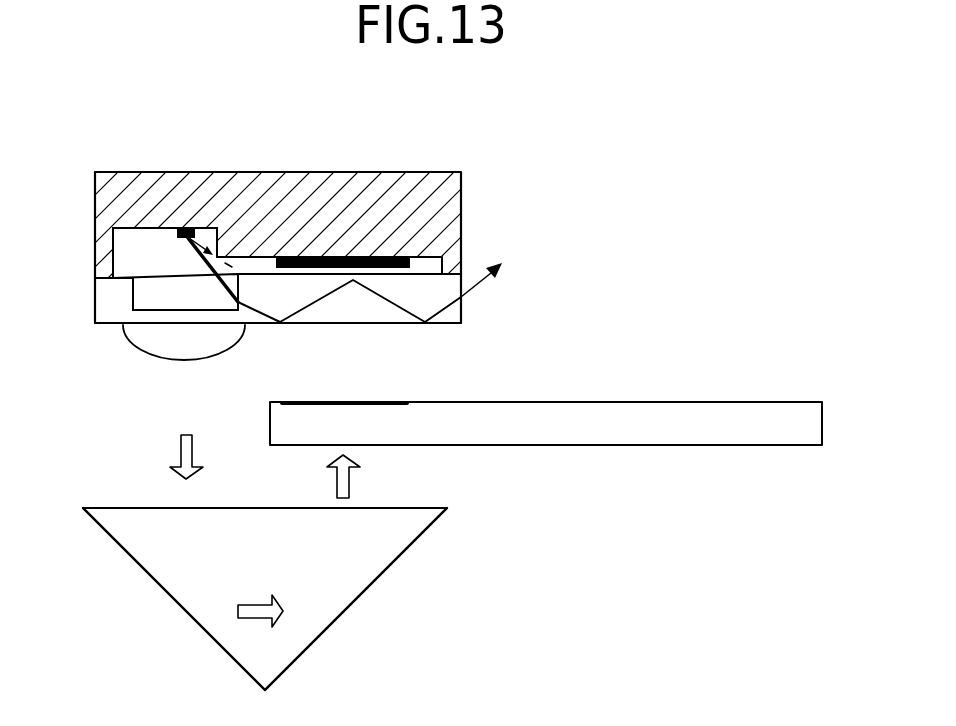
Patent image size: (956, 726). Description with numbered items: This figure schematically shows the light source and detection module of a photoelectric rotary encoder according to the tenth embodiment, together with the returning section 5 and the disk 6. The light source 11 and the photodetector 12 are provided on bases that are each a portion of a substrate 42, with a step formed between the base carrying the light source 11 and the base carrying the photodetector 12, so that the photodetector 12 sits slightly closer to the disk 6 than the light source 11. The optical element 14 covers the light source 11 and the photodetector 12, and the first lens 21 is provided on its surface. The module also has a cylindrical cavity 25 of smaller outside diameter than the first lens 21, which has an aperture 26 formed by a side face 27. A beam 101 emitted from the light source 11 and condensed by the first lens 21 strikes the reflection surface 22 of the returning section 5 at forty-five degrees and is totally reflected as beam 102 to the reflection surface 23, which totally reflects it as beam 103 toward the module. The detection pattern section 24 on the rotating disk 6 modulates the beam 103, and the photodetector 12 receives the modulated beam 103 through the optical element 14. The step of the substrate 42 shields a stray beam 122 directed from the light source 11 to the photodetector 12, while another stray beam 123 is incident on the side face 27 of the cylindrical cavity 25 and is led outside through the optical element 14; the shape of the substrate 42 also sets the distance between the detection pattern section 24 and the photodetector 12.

The returning section 5 is at (152, 568).
The disk 6 is at (537, 407).
The light source 11 is at (182, 228).
The photodetector 12 is at (430, 255).
The optical element 14 is at (107, 300).
The first lens 21 is at (155, 343).
The reflection surface 22 is at (185, 615).
The reflection surface 23 is at (375, 582).
The detection pattern section 24 is at (373, 400).
The cylindrical cavity 25 is at (168, 297).
The aperture 26 is at (192, 313).
The side face 27 is at (250, 323).
The substrate 42 is at (363, 183).
The beam 101 is at (177, 452).
The beam 102 is at (257, 618).
The beam 103 is at (350, 477).
The beam 122 is at (197, 230).
The beam 123 is at (470, 291).